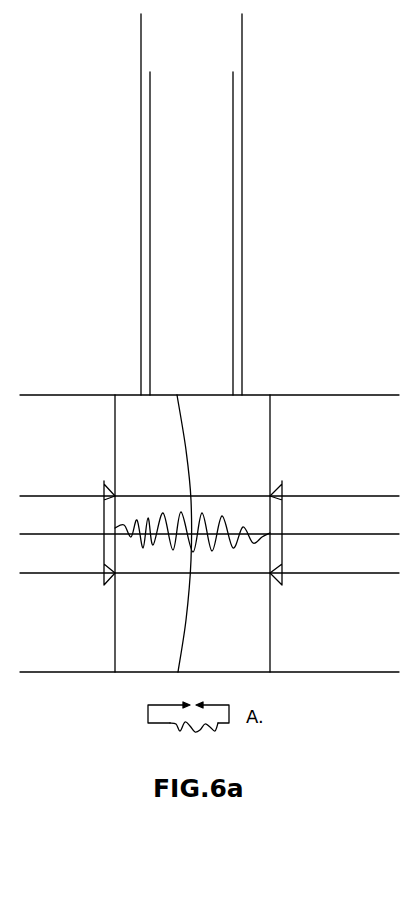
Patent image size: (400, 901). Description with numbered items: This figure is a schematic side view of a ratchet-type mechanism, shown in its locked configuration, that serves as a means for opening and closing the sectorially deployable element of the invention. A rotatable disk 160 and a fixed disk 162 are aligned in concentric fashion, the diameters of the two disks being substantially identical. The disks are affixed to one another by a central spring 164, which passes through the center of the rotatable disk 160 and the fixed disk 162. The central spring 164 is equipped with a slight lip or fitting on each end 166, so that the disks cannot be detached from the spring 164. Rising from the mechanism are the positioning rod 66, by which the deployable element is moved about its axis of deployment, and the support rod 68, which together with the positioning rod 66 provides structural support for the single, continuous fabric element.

The positioning rod 66 is at (144, 183).
The support rod 68 is at (241, 122).
The rotatable disk 160 is at (124, 394).
The fixed disk 162 is at (258, 394).
The central spring 164 is at (155, 543).
The end lip or fitting 166 is at (104, 494).